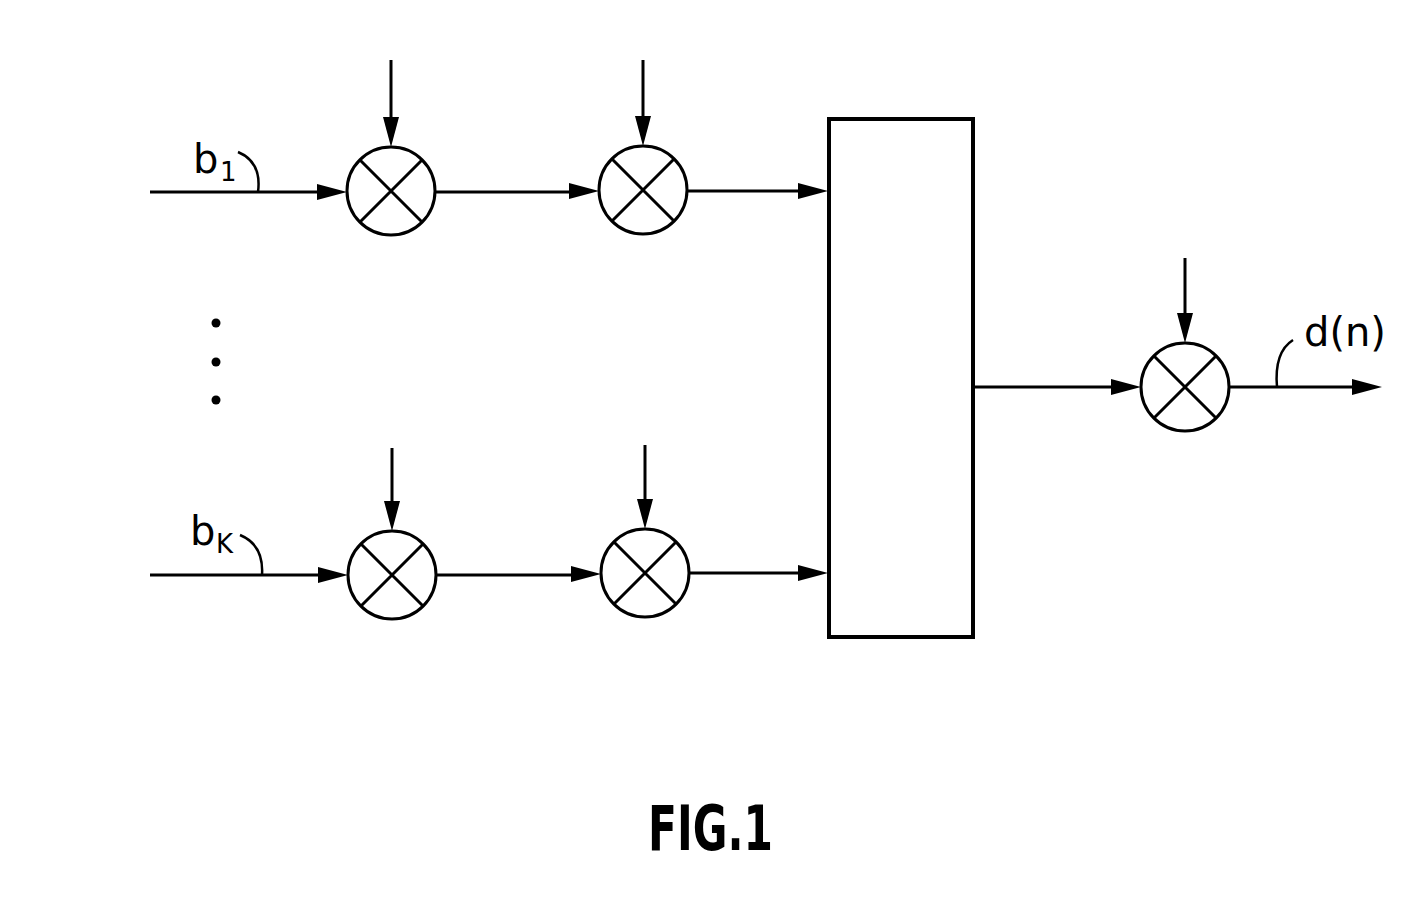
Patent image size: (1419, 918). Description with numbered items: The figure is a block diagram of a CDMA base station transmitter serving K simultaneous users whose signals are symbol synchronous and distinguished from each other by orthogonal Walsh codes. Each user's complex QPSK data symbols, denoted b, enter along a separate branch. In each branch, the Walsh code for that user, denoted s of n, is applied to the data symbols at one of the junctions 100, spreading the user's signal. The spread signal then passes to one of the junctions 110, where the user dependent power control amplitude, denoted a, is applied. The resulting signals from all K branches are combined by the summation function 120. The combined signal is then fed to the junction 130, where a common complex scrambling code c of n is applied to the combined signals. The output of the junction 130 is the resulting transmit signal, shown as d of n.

The junctions 100 is at (390, 236).
The junctions 110 is at (643, 234).
The summation function 120 is at (877, 118).
The junction 130 is at (1185, 431).